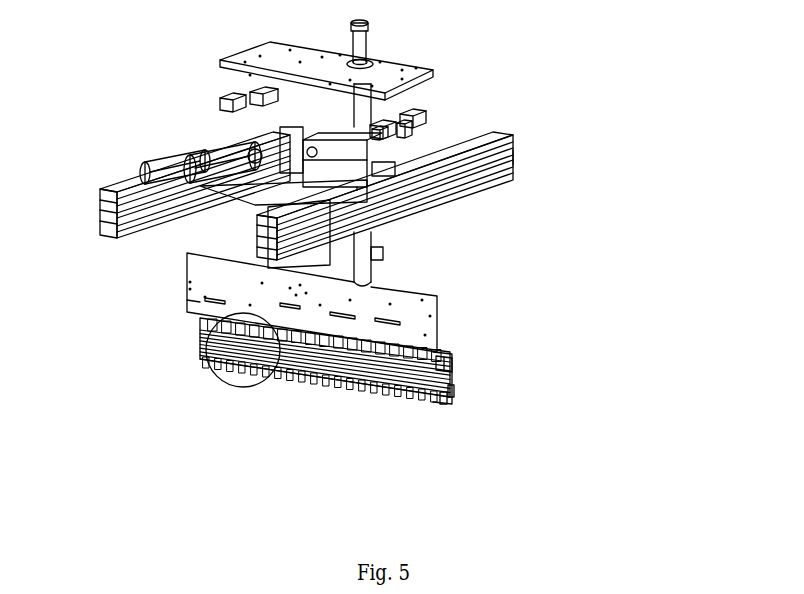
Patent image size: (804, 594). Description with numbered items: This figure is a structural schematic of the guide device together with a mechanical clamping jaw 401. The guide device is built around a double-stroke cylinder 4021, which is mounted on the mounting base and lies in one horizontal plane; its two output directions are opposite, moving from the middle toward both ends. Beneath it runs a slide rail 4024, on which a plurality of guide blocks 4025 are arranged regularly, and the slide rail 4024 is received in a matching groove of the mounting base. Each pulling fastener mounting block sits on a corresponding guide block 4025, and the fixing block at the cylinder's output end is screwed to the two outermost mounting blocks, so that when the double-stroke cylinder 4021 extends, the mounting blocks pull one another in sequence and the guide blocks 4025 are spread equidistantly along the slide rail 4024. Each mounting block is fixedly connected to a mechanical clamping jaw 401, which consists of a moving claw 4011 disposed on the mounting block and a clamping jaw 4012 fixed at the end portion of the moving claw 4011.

The mechanical clamping jaw 401 is at (672, 396).
The moving claw 4011 is at (541, 393).
The clamping jaw 4012 is at (540, 447).
The double-stroke cylinder 4021 is at (385, 333).
The slide rail 4024 is at (325, 401).
The guide block 4025 is at (144, 375).